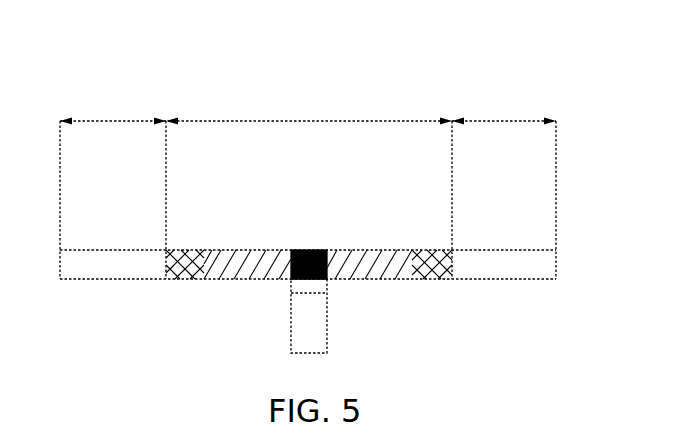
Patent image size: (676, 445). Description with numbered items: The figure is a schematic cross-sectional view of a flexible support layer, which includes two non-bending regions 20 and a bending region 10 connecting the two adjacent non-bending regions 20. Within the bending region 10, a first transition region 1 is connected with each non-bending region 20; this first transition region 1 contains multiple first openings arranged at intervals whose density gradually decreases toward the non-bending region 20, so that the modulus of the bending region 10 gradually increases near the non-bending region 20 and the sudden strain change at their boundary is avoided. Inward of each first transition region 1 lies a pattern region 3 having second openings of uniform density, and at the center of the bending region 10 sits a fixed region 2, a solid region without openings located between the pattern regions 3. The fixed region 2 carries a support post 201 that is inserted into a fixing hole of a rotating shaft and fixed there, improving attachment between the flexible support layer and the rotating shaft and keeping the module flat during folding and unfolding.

The bending region 10 is at (315, 120).
The non-bending region 20 is at (118, 120).
The first transition region 1 is at (188, 248).
The pattern region 3 is at (248, 250).
The fixed region 2 is at (308, 250).
The support post 201 is at (325, 323).